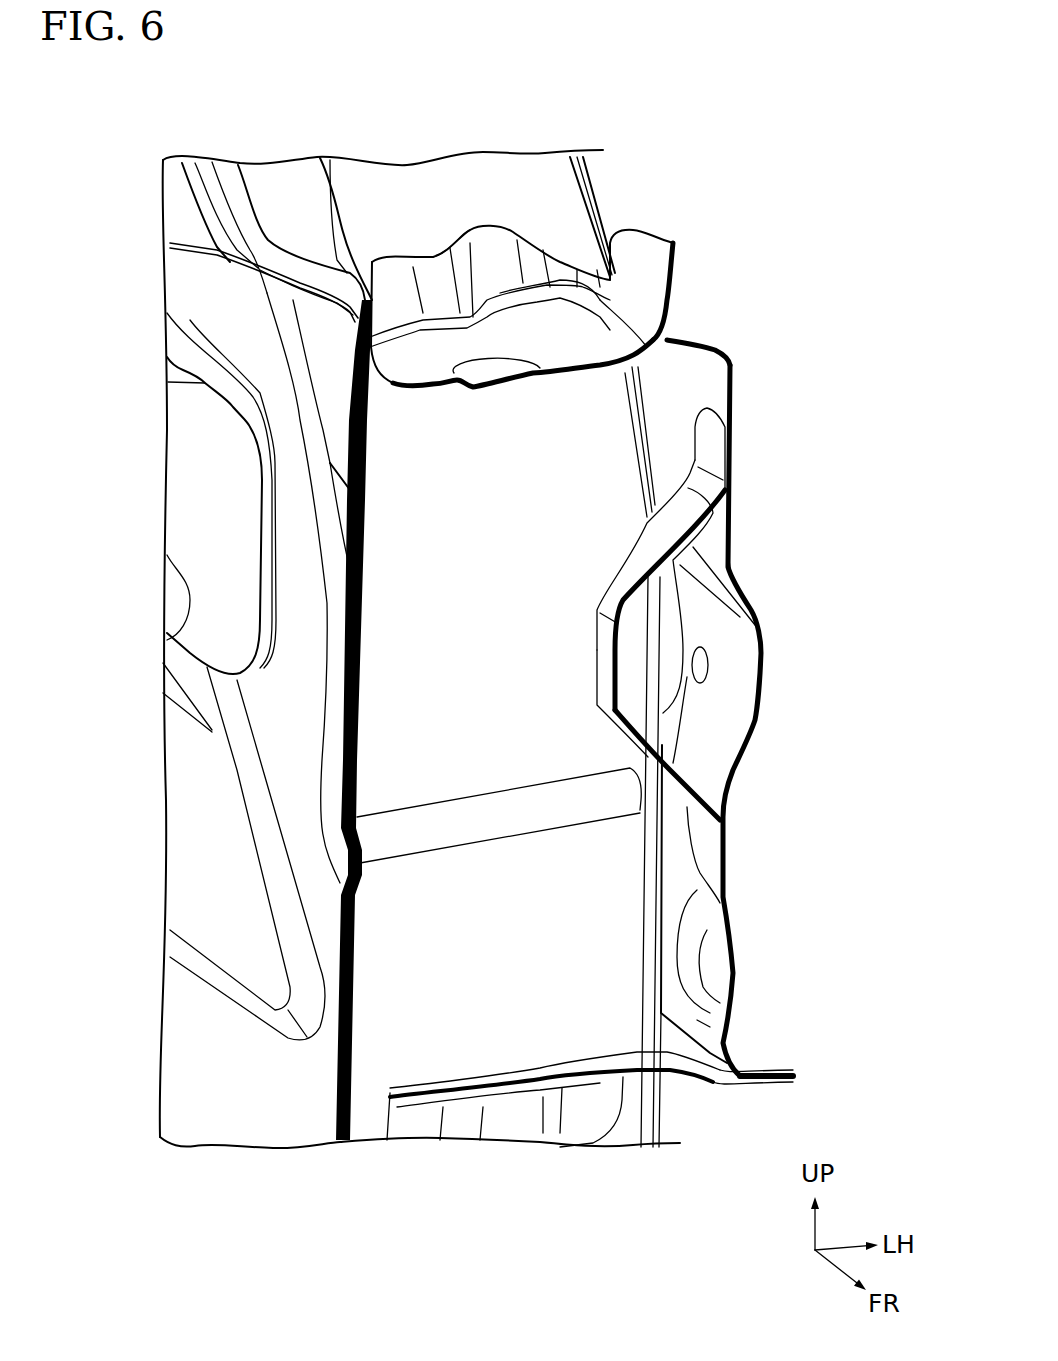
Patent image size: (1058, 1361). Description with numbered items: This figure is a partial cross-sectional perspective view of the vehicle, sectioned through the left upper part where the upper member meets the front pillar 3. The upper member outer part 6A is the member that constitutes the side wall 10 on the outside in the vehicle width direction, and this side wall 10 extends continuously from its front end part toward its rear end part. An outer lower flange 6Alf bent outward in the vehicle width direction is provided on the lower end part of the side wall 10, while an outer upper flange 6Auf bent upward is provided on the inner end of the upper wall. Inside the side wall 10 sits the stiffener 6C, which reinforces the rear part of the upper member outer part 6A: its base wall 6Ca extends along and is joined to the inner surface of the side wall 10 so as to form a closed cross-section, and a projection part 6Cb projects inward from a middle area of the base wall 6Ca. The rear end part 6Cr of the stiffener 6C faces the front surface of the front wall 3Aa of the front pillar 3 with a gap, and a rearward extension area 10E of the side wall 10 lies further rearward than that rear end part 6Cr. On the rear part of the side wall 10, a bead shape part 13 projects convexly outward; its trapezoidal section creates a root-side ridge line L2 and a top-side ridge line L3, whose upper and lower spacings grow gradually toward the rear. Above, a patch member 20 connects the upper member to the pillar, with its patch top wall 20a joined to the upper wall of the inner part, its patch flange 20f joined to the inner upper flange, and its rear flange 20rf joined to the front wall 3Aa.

The front pillar 3 is at (603, 191).
The front wall 3Aa is at (430, 650).
The patch member 20 is at (576, 258).
The patch top wall 20a is at (545, 320).
The rear flange 20rf is at (447, 253).
The patch flange 20f is at (647, 292).
The upper member outer part 6A is at (745, 387).
The outer upper flange 6Auf is at (673, 273).
The outer lower flange 6Alf is at (767, 1060).
The rearward extension area 10E is at (660, 387).
The root-side ridge line L2 is at (735, 578).
The top-side ridge line L3 is at (757, 610).
The bead shape part 13 is at (763, 651).
The side wall 10 is at (733, 947).
The stiffener 6C is at (622, 755).
The projection part 6Cb is at (600, 657).
The rear end part 6Cr is at (598, 573).
The base wall 6Ca is at (710, 857).